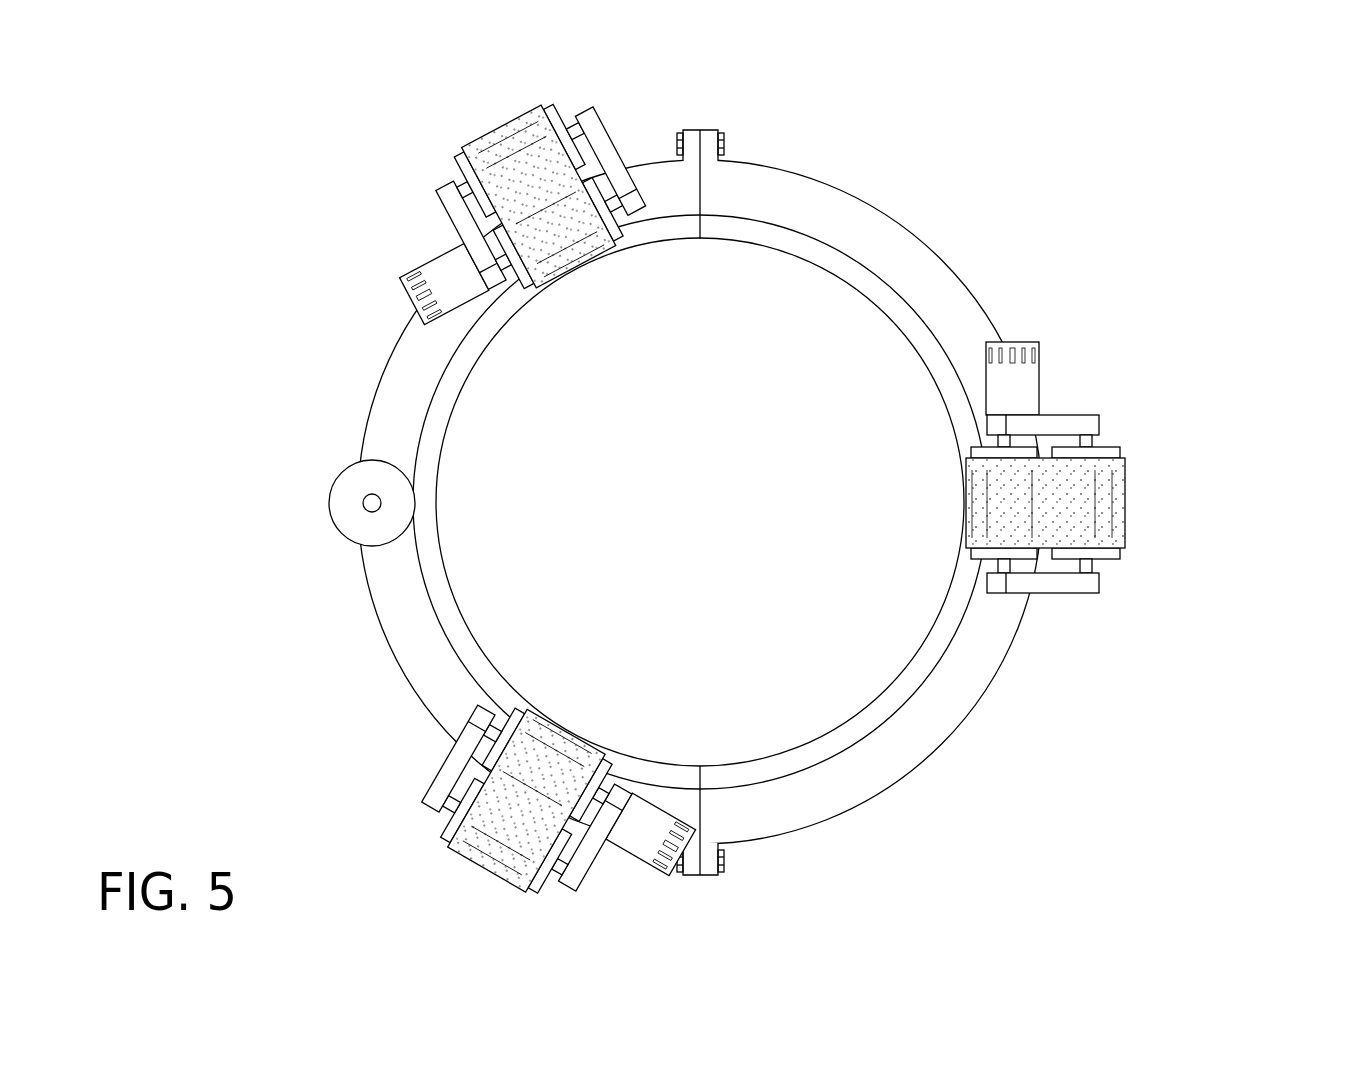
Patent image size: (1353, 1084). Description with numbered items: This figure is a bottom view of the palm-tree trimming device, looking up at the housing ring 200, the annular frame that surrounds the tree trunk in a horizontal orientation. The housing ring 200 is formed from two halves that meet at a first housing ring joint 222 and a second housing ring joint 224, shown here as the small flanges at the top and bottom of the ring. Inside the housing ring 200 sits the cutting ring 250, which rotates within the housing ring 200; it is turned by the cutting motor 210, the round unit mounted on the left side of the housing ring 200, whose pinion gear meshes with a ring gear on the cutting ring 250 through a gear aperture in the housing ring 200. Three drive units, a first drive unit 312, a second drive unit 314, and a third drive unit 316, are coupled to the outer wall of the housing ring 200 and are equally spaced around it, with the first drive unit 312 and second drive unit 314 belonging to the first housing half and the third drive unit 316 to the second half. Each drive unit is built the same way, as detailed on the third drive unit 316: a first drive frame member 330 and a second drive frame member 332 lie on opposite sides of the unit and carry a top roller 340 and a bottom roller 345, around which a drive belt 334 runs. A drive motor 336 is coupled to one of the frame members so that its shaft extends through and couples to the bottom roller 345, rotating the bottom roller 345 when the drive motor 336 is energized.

The housing ring 200 is at (887, 770).
The cutting ring 250 is at (925, 662).
The cutting motor 210 is at (345, 526).
The first housing ring joint 222 is at (787, 885).
The second housing ring joint 224 is at (787, 123).
The first drive unit 312 is at (593, 55).
The second drive unit 314 is at (572, 955).
The third drive unit 316 is at (1073, 469).
The first drive frame member 330 is at (1058, 422).
The second drive frame member 332 is at (1063, 590).
The drive belt 334 is at (1003, 503).
The drive motor 336 is at (1017, 385).
The top roller 340 is at (980, 552).
The bottom roller 345 is at (1105, 552).